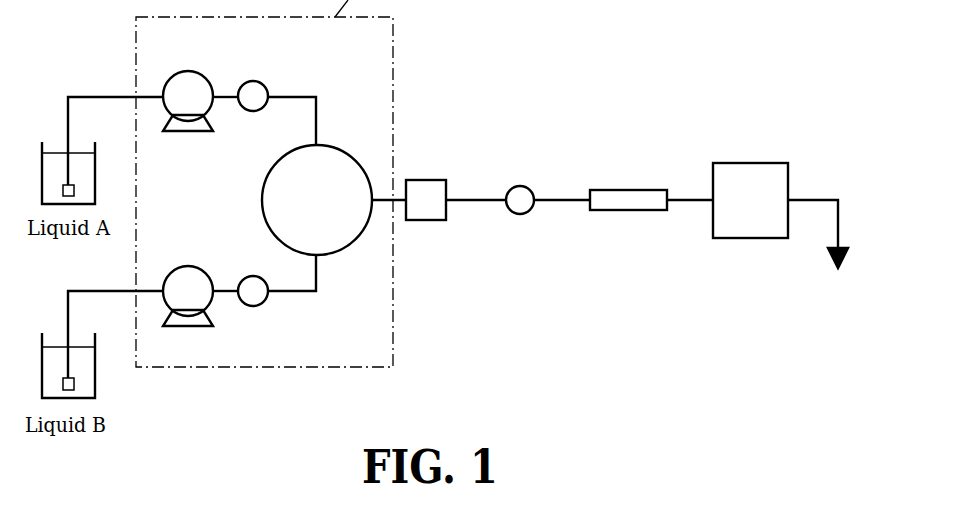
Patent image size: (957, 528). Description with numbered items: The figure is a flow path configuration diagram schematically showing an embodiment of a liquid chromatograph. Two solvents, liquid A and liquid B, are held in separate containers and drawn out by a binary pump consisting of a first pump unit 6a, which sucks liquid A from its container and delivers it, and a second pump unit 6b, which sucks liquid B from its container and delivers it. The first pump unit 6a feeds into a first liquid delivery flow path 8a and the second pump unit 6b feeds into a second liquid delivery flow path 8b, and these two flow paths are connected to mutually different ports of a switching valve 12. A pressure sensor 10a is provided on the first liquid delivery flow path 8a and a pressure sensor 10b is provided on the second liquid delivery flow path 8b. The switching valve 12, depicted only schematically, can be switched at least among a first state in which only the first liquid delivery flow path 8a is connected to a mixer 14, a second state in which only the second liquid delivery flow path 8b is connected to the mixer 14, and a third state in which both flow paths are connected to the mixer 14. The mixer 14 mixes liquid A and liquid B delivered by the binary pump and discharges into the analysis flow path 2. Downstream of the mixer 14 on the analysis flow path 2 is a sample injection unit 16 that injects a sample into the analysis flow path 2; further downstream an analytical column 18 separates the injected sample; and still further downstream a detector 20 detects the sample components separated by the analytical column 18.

The analysis flow path 2 is at (480, 198).
The first pump unit 6a is at (205, 72).
The second pump unit 6b is at (188, 265).
The first liquid delivery flow path 8a is at (312, 95).
The second liquid delivery flow path 8b is at (308, 293).
The pressure sensor 10a is at (263, 78).
The pressure sensor 10b is at (257, 305).
The switching valve 12 is at (342, 147).
The mixer 14 is at (430, 178).
The sample injection unit 16 is at (528, 187).
The analytical column 18 is at (643, 189).
The detector 20 is at (775, 162).